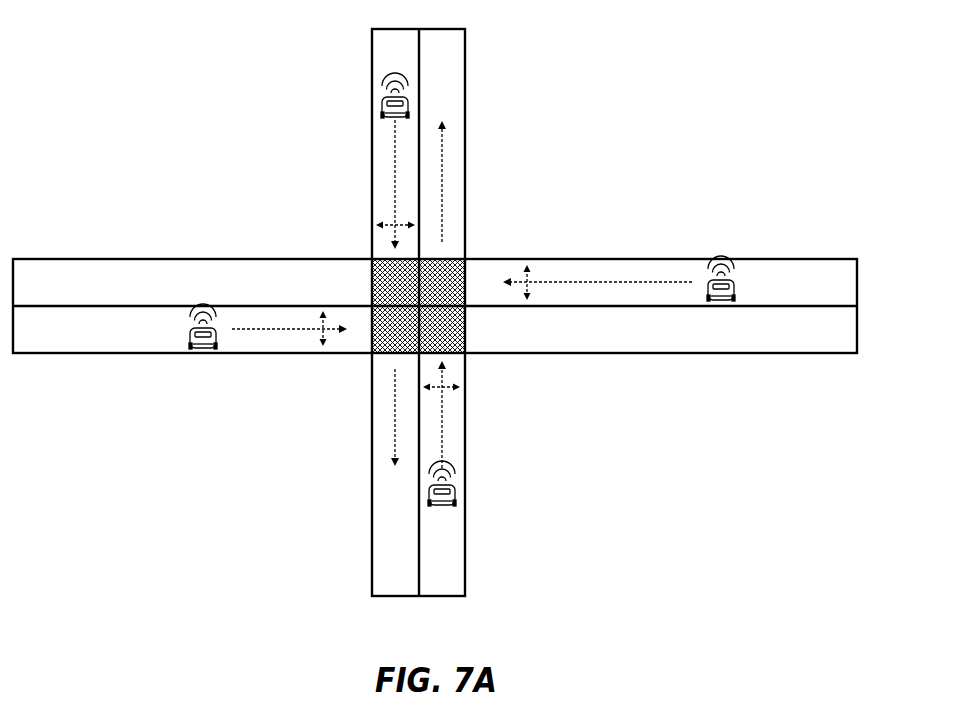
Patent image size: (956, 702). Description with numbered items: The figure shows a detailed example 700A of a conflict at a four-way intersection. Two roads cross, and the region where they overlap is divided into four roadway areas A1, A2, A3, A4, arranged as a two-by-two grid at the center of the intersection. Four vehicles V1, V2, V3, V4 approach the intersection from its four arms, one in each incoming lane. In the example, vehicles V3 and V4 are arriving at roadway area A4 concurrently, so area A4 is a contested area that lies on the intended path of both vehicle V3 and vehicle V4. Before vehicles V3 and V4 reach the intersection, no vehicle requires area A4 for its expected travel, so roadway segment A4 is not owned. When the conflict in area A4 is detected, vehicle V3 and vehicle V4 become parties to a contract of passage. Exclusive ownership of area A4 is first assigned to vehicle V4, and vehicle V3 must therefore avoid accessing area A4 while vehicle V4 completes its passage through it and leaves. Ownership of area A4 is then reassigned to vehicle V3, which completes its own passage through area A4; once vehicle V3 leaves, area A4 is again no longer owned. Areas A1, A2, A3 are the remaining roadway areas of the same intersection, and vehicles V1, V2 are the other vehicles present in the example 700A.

The detailed example of a conflict at a four-way intersection 700A is at (182, 54).
The vehicle V1 is at (741, 278).
The vehicle V2 is at (395, 82).
The vehicle V3 is at (182, 326).
The vehicle V4 is at (442, 497).
The roadway area A1 is at (442, 282).
The roadway area A2 is at (395, 282).
The roadway area A3 is at (395, 329).
The roadway area A4 is at (442, 329).